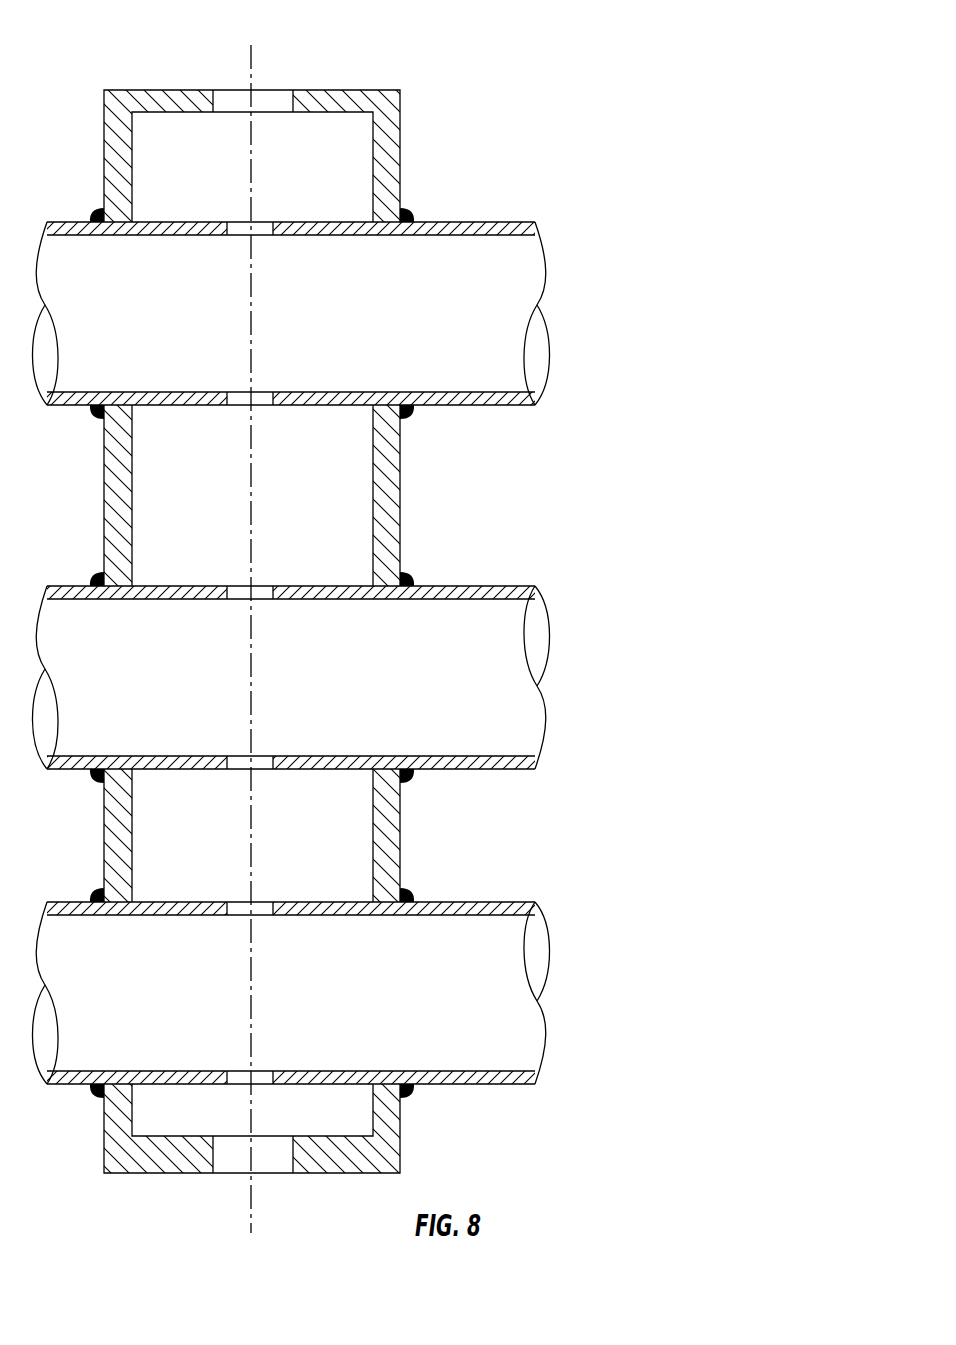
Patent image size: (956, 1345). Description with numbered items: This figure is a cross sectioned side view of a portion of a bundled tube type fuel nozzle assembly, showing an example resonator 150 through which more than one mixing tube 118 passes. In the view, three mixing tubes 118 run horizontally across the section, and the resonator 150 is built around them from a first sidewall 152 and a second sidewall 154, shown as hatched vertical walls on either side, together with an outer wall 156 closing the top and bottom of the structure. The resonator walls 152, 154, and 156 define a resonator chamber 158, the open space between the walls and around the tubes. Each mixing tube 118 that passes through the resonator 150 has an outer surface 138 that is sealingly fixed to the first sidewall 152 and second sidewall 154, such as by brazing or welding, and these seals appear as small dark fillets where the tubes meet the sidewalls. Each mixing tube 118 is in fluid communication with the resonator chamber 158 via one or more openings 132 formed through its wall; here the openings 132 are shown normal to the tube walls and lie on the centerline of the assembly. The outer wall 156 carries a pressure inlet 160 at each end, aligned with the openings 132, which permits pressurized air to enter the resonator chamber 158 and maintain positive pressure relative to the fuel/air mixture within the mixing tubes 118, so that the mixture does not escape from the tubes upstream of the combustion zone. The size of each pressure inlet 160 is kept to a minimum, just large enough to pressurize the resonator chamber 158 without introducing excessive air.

The resonator 150 is at (507, 61).
The mixing tube 118 is at (494, 422).
The opening 132 is at (243, 222).
The outer surface of mixing tube 138 is at (68, 222).
The first sidewall 152 is at (104, 515).
The second sidewall 154 is at (400, 513).
The outer wall 156 is at (317, 90).
The resonator chamber 158 is at (251, 495).
The pressure inlet 160 is at (233, 103).